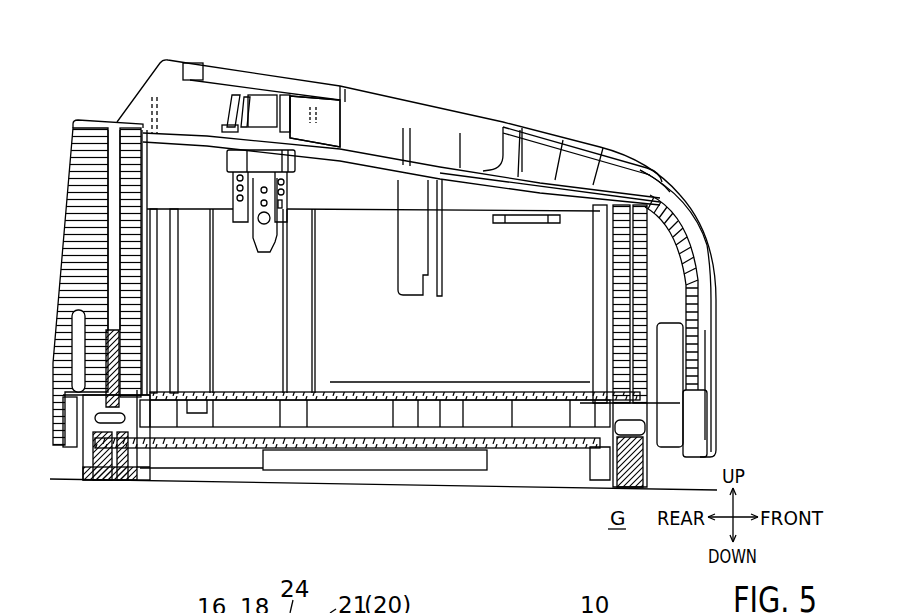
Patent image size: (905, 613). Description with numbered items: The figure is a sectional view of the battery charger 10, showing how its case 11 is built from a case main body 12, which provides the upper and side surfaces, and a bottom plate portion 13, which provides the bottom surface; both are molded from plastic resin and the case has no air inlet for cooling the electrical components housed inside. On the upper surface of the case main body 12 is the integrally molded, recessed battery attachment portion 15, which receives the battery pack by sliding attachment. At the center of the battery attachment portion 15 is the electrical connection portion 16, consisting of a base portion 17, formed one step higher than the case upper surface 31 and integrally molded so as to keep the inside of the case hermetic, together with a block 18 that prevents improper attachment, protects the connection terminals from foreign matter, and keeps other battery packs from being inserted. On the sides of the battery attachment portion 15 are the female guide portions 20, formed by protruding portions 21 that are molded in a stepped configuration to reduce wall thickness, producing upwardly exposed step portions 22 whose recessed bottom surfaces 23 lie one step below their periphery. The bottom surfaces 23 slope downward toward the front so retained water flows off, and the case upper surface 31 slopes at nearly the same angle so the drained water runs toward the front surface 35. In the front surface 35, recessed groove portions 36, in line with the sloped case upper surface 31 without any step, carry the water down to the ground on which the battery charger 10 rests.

The battery charger 10 is at (593, 92).
The case 11 is at (760, 347).
The case main body 12 is at (715, 347).
The bottom plate portion 13 is at (715, 423).
The battery attachment portion 15 is at (345, 148).
The electrical connection portion 16 is at (227, 114).
The base portion 17 is at (220, 133).
The block for preventing improper attachment 18 is at (267, 108).
The female guide portions 20 is at (397, 67).
The protruding portions 21 is at (340, 82).
The exposed step portions 22 is at (329, 79).
The bottom surfaces 23 is at (304, 87).
The case upper surface 31 is at (460, 167).
The front surface 35 is at (693, 163).
The recessed groove portions 36 is at (702, 232).